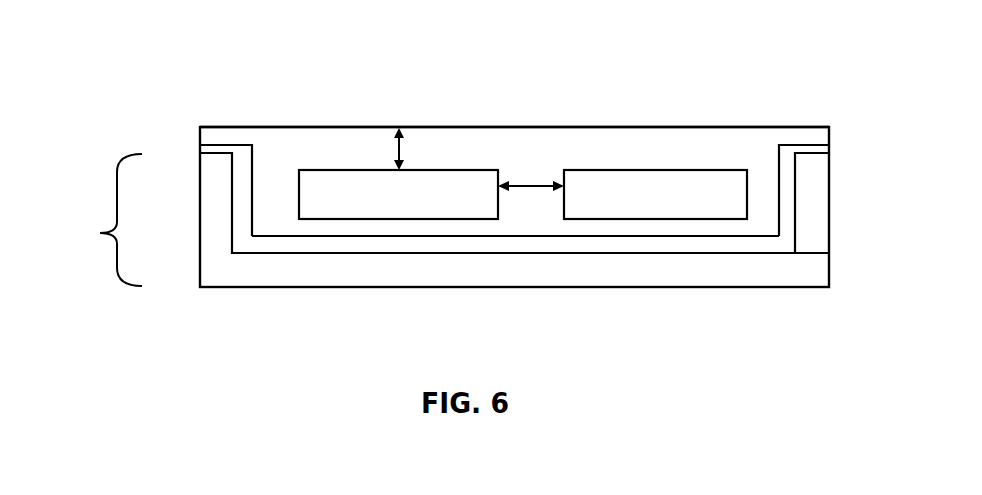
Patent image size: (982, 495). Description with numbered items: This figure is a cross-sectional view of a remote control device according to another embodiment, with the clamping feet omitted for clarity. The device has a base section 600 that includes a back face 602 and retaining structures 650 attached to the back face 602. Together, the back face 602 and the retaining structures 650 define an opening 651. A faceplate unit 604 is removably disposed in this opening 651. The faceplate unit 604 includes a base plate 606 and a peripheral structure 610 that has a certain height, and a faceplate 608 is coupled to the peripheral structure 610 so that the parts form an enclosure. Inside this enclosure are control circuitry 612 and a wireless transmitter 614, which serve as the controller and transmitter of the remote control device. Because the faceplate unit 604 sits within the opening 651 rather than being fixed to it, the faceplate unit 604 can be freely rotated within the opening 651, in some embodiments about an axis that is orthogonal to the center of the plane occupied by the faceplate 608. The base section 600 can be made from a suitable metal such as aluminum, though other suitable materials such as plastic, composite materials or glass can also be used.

The base section 600 is at (83, 220).
The back face 602 is at (613, 287).
The faceplate unit 604 is at (712, 123).
The base plate 606 is at (432, 237).
The faceplate 608 is at (498, 126).
The peripheral structure 610 is at (252, 170).
The control circuitry 612 is at (349, 170).
The wireless transmitter 614 is at (613, 171).
The retaining structures 650 is at (829, 253).
The opening 651 is at (252, 243).